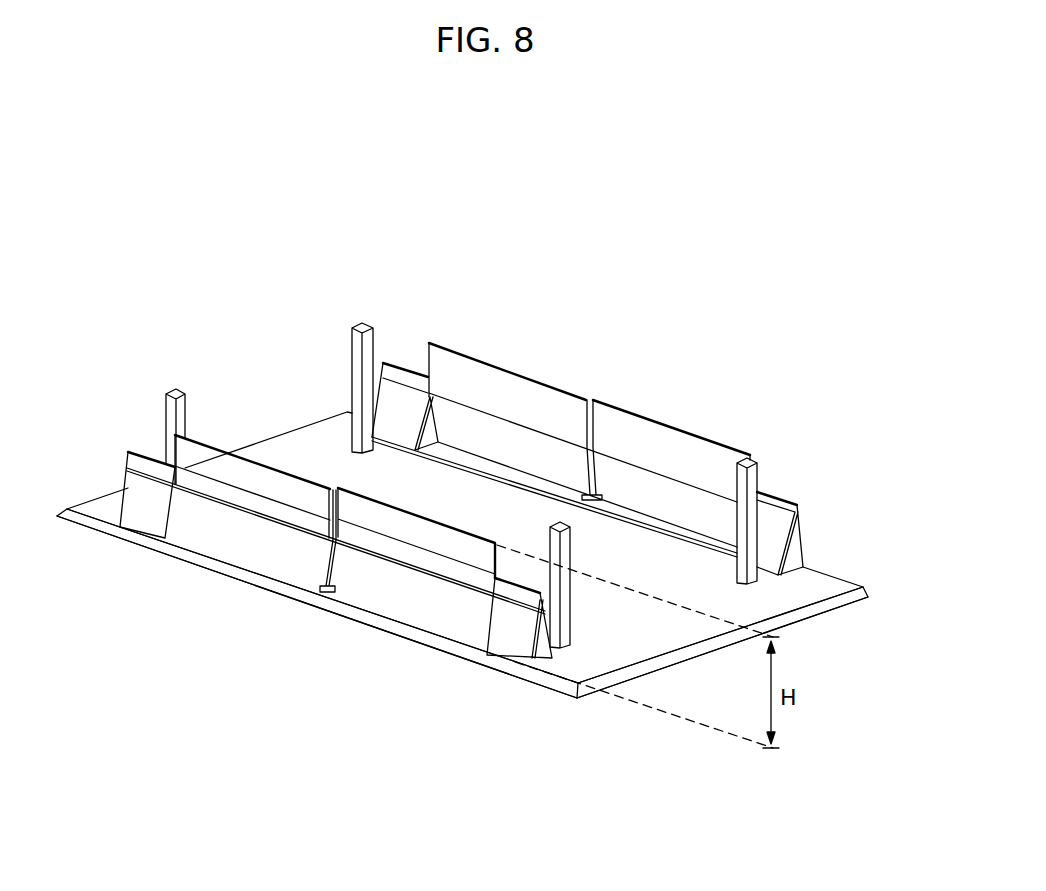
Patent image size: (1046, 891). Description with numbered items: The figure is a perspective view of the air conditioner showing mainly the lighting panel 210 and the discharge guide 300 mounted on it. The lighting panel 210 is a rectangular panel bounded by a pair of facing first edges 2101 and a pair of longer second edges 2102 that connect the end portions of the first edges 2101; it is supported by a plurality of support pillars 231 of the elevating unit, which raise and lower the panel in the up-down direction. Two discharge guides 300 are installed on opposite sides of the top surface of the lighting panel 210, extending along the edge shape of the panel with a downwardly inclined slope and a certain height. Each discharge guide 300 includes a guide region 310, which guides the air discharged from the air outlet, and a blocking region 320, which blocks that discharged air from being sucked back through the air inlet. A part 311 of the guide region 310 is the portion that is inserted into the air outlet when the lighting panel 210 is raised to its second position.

The lighting panel 210 is at (728, 605).
The first edge 2101 is at (832, 602).
The second edge 2102 is at (410, 635).
The support pillar 231 is at (357, 363).
The discharge guide 300 is at (467, 522).
The guide region 310 is at (452, 502).
The part of the discharge guide 311 is at (272, 483).
The blocking region 320 is at (403, 378).